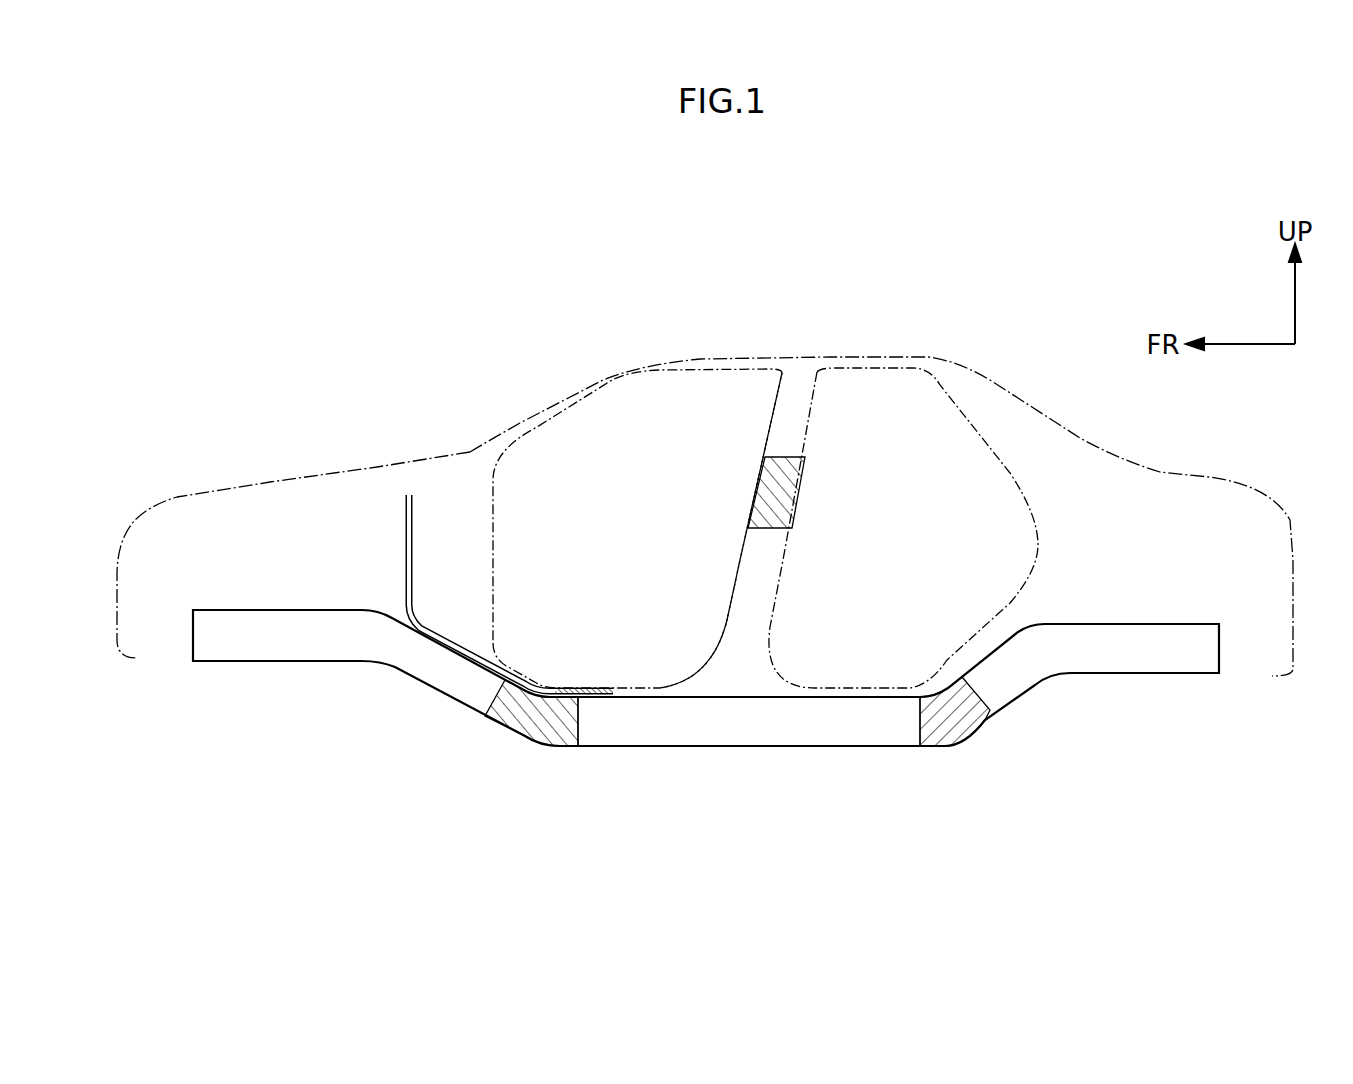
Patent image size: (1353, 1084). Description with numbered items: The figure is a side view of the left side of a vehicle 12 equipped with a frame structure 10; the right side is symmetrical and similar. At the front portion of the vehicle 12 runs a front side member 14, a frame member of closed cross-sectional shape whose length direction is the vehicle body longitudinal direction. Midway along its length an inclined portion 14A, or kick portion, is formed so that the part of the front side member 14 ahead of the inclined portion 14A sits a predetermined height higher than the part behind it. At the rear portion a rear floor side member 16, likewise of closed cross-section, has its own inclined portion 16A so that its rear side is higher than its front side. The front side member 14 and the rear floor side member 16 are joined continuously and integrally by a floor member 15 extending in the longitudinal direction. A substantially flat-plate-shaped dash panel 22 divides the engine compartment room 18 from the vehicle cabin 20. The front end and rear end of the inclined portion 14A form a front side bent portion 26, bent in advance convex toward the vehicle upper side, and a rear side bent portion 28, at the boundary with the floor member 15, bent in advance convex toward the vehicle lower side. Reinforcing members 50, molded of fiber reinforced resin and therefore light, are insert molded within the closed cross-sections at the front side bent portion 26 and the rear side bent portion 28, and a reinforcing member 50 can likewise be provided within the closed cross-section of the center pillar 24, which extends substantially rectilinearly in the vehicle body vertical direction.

The frame structure 10 is at (679, 646).
The vehicle 12 is at (628, 365).
The front side member 14 is at (230, 606).
The inclined portion 14A is at (445, 683).
The floor member 15 is at (715, 750).
The rear floor side member 16 is at (1121, 622).
The inclined portion 16A is at (1000, 685).
The engine compartment room 18 is at (275, 567).
The vehicle cabin 20 is at (602, 530).
The dash panel 22 is at (403, 527).
The center pillar 24 is at (815, 422).
The front side bent portion 26 is at (383, 668).
The rear side bent portion 28 is at (530, 748).
The reinforcing member 50 is at (545, 728).